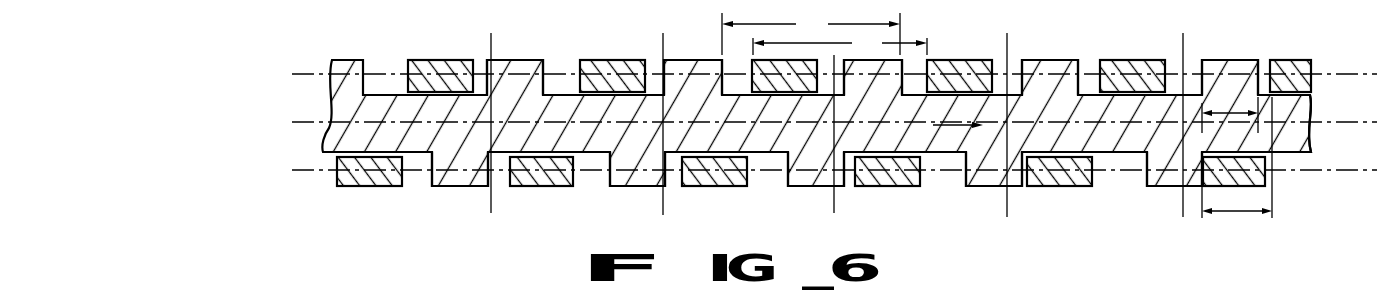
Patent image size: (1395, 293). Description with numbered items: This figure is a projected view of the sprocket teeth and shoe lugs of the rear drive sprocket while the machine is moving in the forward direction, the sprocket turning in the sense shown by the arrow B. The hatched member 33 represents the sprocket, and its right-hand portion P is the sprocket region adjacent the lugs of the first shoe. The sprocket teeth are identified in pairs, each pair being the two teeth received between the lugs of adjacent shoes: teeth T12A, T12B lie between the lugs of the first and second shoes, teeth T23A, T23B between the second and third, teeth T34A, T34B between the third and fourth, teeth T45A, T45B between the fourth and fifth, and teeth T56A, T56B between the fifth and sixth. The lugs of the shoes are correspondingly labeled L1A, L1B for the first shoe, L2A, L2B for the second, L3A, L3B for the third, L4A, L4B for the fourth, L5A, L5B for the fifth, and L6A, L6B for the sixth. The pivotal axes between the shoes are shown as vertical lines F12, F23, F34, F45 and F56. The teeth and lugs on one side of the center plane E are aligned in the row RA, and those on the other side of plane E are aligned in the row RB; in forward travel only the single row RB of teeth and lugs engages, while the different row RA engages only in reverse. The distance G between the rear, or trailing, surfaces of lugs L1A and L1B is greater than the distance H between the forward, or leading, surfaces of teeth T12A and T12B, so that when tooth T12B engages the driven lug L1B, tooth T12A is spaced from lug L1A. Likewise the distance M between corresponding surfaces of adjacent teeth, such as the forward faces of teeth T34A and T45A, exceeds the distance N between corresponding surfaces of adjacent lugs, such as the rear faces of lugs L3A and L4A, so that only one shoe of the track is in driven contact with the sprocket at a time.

The row RA is at (302, 73).
The center plane E is at (298, 121).
The row RB is at (310, 168).
The toothed core member 33 is at (1316, 107).
The pole section P is at (1317, 127).
The sprocket tooth T56A is at (512, 61).
The sprocket tooth T45A is at (690, 61).
The sprocket tooth T34A is at (874, 80).
The sprocket tooth T23A is at (1049, 68).
The sprocket tooth T12A is at (1227, 61).
The sprocket tooth T56B is at (455, 187).
The sprocket tooth T45B is at (630, 186).
The sprocket tooth T34B is at (813, 186).
The sprocket tooth T23B is at (995, 186).
The sprocket tooth T12B is at (1167, 186).
The shoe lug L6A is at (430, 61).
The shoe lug L5A is at (607, 61).
The shoe lug L4A is at (798, 93).
The shoe lug L3A is at (958, 61).
The shoe lug L2A is at (1123, 61).
The shoe lug L1A is at (1295, 61).
The shoe lug L6B is at (373, 186).
The shoe lug L5B is at (545, 186).
The shoe lug L4B is at (737, 186).
The shoe lug L3B is at (903, 186).
The shoe lug L2B is at (1063, 186).
The shoe lug L1B is at (1265, 182).
The pivot axis F56 is at (491, 213).
The pivot axis F45 is at (663, 217).
The pivot axis F34 is at (834, 213).
The pivot axis F23 is at (1007, 218).
The pivot axis F12 is at (1183, 218).
The distance between corresponding surfaces of adjacent teeth M is at (811, 34).
The distance between corresponding surfaces on adjacent lugs N is at (840, 43).
The distance between leading surfaces of teeth H is at (1230, 112).
The distance between trailing surfaces of lugs G is at (1237, 215).
The direction arrow B is at (950, 126).